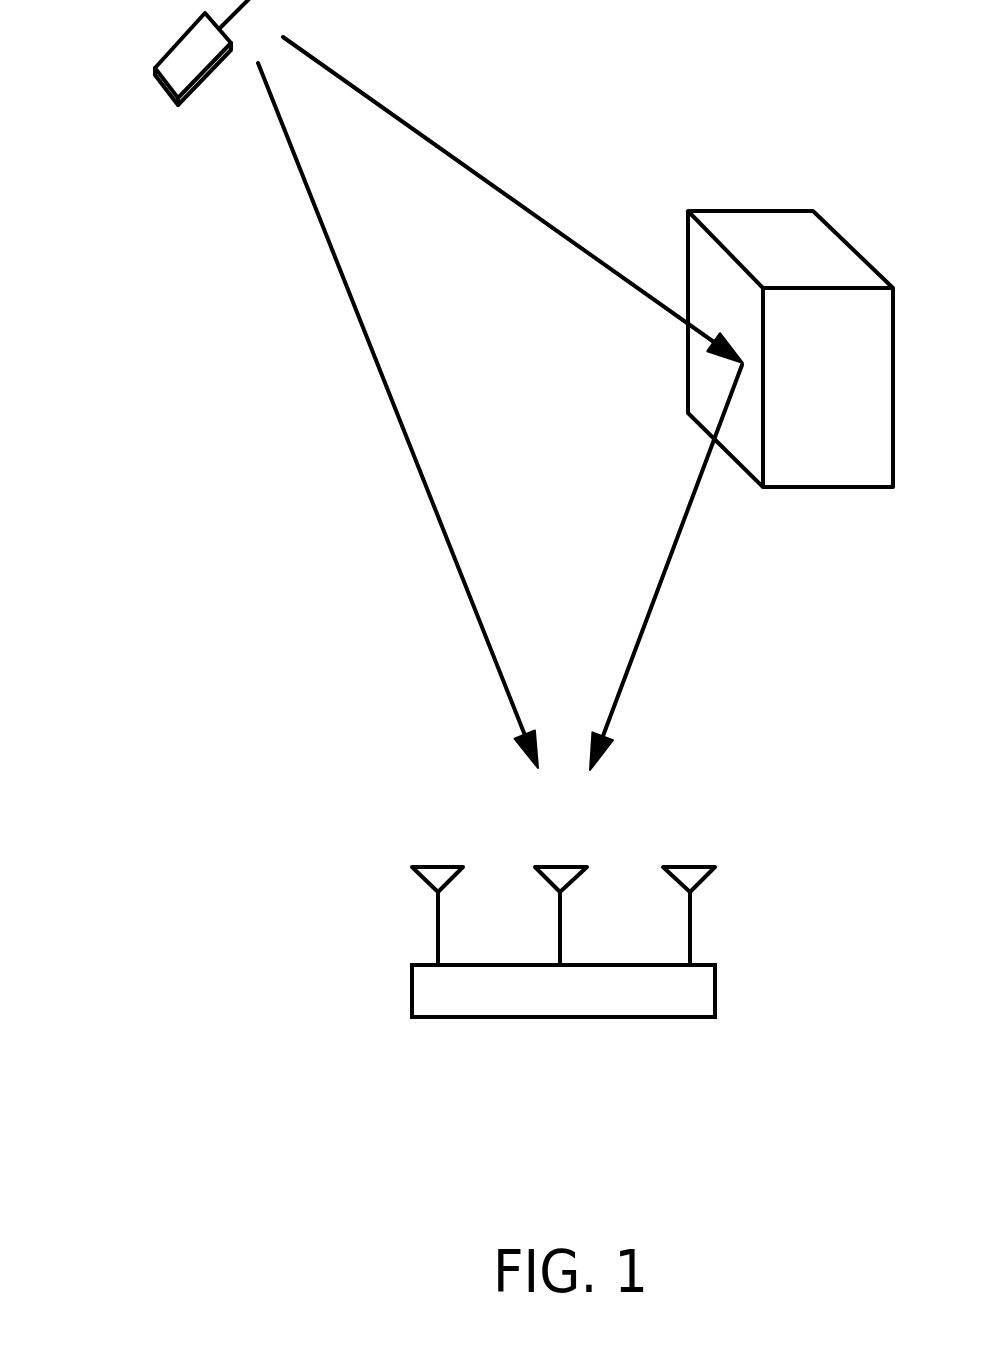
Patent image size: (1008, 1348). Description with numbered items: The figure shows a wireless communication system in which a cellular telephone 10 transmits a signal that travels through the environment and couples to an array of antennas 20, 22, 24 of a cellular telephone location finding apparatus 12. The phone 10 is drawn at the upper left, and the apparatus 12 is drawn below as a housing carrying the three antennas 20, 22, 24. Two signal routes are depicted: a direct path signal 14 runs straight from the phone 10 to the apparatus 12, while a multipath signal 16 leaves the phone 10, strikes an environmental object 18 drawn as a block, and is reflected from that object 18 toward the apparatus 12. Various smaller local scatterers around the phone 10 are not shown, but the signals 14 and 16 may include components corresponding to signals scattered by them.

The cellular telephone 10 is at (162, 90).
The cellular telephone location finding apparatus 12 is at (563, 1017).
The direct path signal 14 is at (413, 442).
The multipath signal 16 is at (562, 237).
The object 18 is at (840, 490).
The antenna 20 is at (453, 877).
The antenna 22 is at (582, 875).
The antenna 24 is at (707, 875).